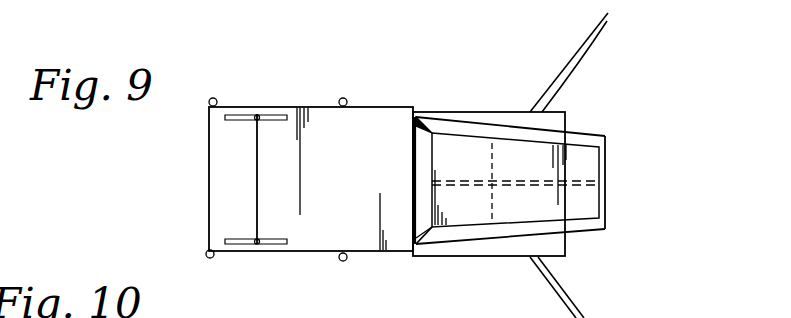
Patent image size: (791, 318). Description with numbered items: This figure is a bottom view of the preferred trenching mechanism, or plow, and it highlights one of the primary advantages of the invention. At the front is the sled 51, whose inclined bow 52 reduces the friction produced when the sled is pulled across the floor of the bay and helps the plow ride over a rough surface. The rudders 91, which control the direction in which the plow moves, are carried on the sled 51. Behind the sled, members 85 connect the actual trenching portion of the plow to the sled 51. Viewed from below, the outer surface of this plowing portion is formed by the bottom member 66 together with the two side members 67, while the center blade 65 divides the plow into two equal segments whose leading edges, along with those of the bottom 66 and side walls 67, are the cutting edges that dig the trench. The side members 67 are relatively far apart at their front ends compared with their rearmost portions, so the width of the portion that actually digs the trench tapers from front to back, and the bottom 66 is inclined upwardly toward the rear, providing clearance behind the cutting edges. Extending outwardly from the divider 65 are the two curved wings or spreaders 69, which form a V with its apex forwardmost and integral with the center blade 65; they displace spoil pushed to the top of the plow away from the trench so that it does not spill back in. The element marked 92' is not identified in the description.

In FIG. 9, the sled 51 is at (345, 209).
In FIG. 9, the inclined bow 52 is at (225, 171).
In FIG. 9, the center blade 65 is at (584, 186).
In FIG. 9, the base member 66 is at (535, 168).
In FIG. 9, the outer side wall 67 is at (595, 131).
In FIG. 9, the wings or spreaders 69 is at (588, 55).
In FIG. 9, the members 85 is at (513, 112).
In FIG. 9, the rudders 91 is at (283, 115).
In FIG. 10, the member (FIG. 10, partial) 92' is at (162, 310).